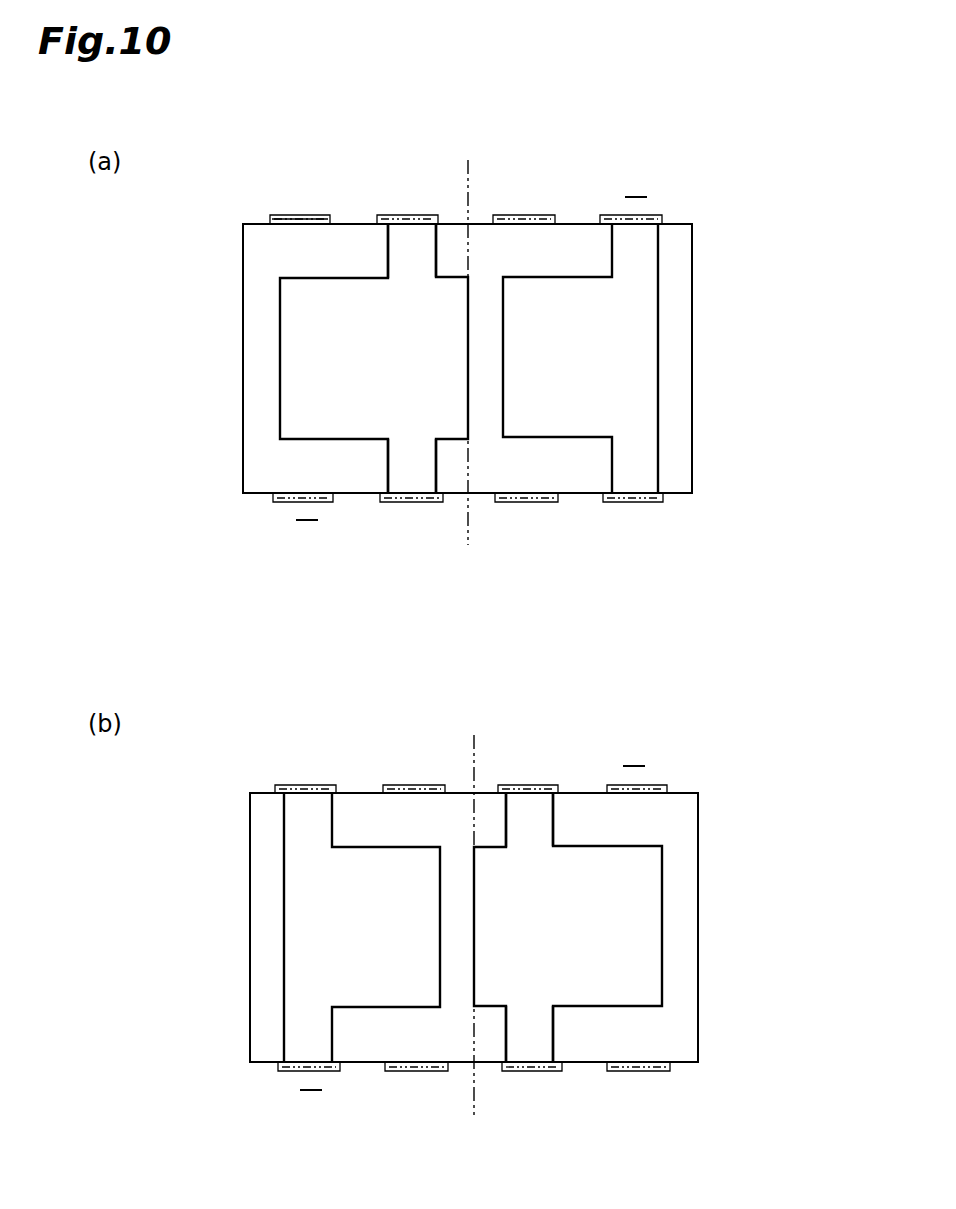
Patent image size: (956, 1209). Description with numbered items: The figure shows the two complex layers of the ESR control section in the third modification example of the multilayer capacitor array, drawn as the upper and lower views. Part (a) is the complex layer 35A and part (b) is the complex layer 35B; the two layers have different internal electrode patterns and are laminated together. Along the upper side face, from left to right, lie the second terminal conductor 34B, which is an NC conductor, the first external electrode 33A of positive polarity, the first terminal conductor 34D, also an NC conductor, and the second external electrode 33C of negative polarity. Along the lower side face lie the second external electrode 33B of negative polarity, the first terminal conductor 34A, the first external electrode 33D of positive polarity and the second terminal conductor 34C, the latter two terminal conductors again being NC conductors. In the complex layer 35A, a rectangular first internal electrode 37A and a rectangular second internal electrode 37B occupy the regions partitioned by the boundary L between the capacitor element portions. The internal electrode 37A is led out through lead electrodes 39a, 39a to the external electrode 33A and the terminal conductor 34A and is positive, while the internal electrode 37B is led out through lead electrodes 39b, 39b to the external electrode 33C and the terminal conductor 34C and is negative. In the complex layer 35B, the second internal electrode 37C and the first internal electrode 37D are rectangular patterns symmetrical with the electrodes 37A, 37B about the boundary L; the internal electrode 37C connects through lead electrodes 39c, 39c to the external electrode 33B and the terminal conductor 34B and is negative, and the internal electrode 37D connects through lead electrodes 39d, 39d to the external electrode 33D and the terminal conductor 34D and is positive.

The first external electrode 33A is at (389, 213).
The second external electrode 33B is at (278, 503).
The second external electrode 33C is at (652, 213).
The first external electrode 33D is at (545, 503).
The first terminal conductor 34A is at (390, 503).
The second terminal conductor 34B is at (281, 213).
The second terminal conductor 34C is at (655, 503).
The first terminal conductor 34D is at (548, 213).
The complex layer 35A is at (748, 198).
The complex layer 35B is at (748, 766).
The first internal electrode 37A is at (300, 350).
The second internal electrode 37B is at (640, 352).
The second internal electrode 37C is at (305, 940).
The first internal electrode 37D is at (640, 937).
The lead electrode 39a is at (410, 252).
The lead electrode 39b is at (645, 247).
The lead electrode 39c is at (302, 826).
The lead electrode 39d is at (540, 815).
The boundary L is at (470, 530).